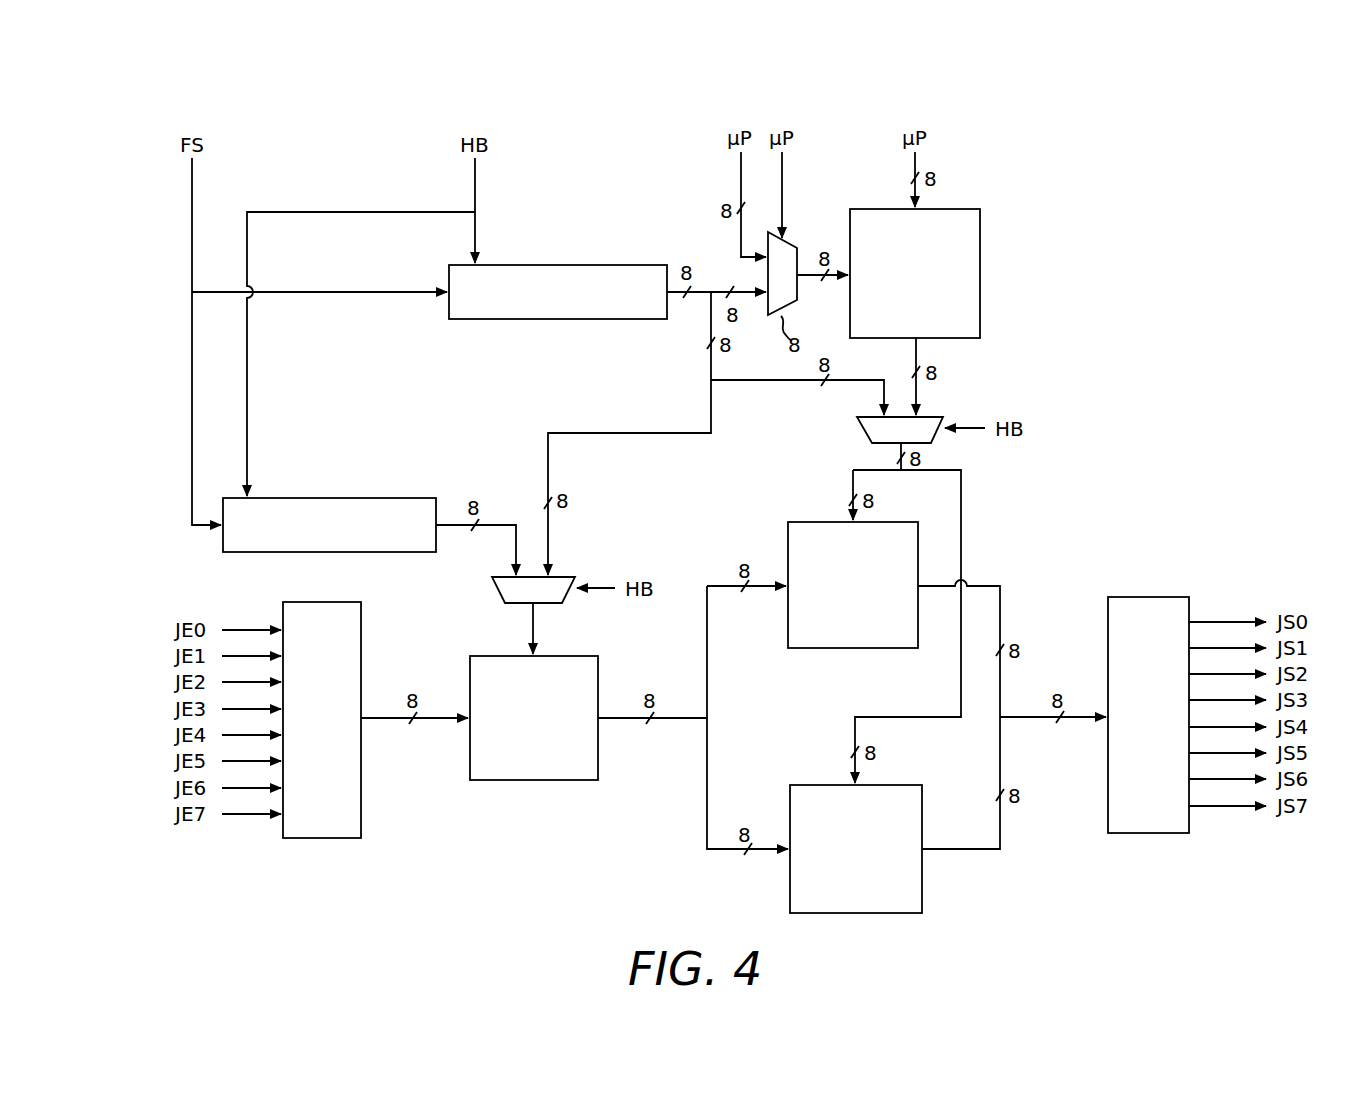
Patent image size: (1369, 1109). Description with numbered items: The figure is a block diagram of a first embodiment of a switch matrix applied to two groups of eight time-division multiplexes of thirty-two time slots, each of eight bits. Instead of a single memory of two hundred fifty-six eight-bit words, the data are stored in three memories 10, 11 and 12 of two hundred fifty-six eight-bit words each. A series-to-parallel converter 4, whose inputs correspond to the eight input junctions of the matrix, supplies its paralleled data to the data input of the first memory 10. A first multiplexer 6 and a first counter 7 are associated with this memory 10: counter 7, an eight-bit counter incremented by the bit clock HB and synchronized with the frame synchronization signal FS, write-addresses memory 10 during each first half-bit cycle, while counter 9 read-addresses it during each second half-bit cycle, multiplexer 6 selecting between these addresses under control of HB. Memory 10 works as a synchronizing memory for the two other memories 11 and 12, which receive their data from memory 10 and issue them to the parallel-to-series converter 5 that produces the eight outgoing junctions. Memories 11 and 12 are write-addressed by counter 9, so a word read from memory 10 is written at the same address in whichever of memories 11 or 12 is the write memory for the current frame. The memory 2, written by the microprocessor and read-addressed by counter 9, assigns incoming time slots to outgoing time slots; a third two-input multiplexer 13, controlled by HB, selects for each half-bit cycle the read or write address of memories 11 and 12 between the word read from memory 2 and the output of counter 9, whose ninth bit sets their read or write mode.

The memory 2 is at (980, 270).
The series-to-parallel converter 4 is at (361, 628).
The parallel-to-series converter 5 is at (1148, 597).
The first multiplexer 6 is at (493, 587).
The first counter 7 is at (343, 498).
The counter 9 is at (570, 265).
The first memory 10 is at (598, 670).
The memory 11 is at (797, 522).
The memory 12 is at (805, 785).
The third two-input multiplexer 13 is at (861, 430).